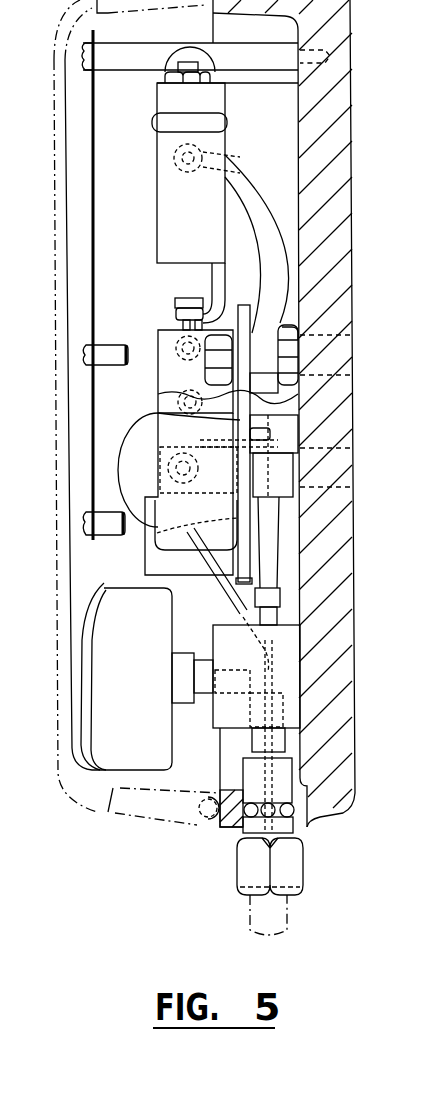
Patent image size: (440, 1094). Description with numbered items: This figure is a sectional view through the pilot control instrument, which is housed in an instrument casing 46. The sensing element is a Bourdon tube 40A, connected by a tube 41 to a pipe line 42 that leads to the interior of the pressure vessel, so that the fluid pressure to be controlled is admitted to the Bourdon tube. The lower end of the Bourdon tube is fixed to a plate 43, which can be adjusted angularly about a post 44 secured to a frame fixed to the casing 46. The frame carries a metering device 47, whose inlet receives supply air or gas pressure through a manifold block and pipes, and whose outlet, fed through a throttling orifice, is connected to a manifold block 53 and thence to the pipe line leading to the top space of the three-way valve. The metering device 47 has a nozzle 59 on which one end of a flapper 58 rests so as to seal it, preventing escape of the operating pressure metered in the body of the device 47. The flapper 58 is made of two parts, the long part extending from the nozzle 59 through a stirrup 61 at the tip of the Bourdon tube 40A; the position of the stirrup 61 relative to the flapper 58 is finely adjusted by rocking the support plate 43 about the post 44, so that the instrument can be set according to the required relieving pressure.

The solenoid cylinder 40A is at (298, 197).
The tube 41 is at (232, 600).
The pipe line 42 is at (273, 902).
The plate 43 is at (145, 560).
The post 44 is at (263, 360).
The instrument casing 46 is at (338, 200).
The metering device 47 is at (157, 385).
The manifold block 53 is at (158, 712).
The flapper 58 is at (175, 303).
The nozzle 59 is at (178, 327).
The stirrup 61 is at (213, 280).